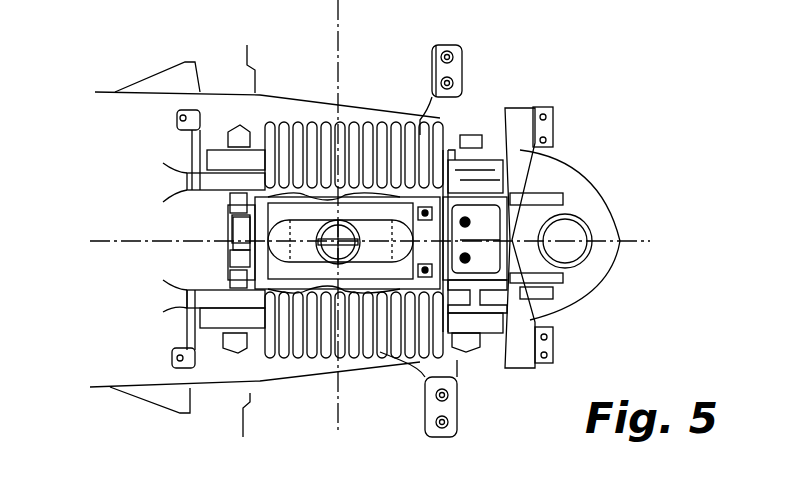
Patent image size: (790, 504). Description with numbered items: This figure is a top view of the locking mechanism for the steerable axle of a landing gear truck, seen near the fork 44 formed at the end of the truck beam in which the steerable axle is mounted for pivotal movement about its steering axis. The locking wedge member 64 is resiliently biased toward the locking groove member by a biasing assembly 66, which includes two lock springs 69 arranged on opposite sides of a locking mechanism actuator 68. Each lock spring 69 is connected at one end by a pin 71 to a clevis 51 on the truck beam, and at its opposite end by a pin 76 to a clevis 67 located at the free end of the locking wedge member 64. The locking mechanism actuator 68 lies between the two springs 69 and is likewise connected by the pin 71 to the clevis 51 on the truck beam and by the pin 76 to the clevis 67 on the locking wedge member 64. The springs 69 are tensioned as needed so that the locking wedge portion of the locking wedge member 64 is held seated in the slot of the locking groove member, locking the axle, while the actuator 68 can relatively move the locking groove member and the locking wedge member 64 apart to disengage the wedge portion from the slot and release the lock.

The fork 44 is at (605, 250).
The clevis 51 is at (205, 322).
The locking wedge member 64 is at (480, 248).
The biasing assembly 66 is at (531, 82).
The clevis 67 is at (478, 258).
The locking mechanism actuator 68 is at (365, 252).
The lock spring 69 is at (460, 250).
The pin 71 is at (240, 350).
The pin 76 is at (463, 343).